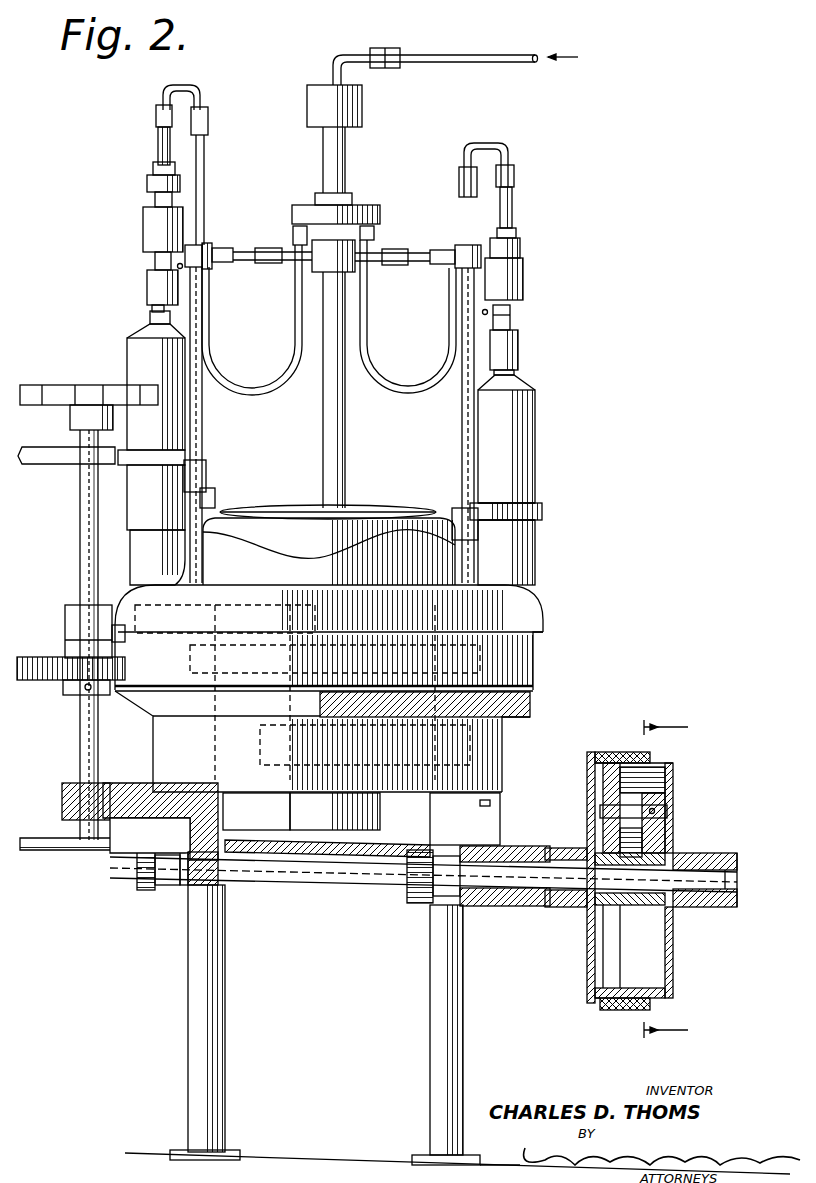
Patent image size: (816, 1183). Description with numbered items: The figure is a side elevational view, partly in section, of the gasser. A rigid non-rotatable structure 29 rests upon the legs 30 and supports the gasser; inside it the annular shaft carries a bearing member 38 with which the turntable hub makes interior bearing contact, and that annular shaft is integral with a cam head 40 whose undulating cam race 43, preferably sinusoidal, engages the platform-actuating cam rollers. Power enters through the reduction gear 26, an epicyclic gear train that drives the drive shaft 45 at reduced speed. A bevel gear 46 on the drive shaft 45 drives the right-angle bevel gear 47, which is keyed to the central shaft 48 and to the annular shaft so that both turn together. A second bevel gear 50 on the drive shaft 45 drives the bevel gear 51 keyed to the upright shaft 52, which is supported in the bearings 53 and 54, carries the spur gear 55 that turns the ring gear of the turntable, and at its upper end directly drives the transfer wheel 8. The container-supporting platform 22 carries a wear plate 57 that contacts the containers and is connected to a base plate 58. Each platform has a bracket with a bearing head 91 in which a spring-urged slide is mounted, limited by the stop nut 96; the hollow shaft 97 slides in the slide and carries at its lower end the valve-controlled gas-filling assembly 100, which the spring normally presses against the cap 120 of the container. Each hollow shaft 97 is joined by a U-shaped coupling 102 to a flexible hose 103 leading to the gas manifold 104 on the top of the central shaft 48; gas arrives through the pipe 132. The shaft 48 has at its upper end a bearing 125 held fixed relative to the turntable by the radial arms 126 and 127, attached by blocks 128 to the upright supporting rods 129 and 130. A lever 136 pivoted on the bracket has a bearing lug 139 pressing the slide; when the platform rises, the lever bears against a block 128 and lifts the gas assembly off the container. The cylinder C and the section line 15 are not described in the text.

The U-shaped coupling 102 is at (195, 76).
The hollow shaft 97 is at (157, 147).
The stop nut 96 is at (147, 182).
The bearing head 91 is at (143, 221).
The bearing lug 139 is at (511, 311).
The gas-filling assembly 100 is at (146, 274).
The cap 120 is at (150, 317).
The cylinder C is at (135, 355).
The transfer wheel 8 is at (58, 385).
The upright shaft 52 is at (80, 530).
The bearing 53 is at (68, 605).
The spur gear 55 is at (33, 657).
The bearing 54 is at (64, 783).
The bevel gear 51 is at (95, 851).
The bevel gear 50 is at (140, 886).
The block 128 is at (206, 243).
The upright supporting rod 129 is at (204, 318).
The radial arm 126 is at (258, 248).
The bearing 125 is at (314, 262).
The radial arm 127 is at (398, 245).
The flexible hose 103 is at (246, 390).
The lever 136 is at (462, 299).
The upright supporting rod 130 is at (462, 351).
The pipe 132 is at (345, 68).
The central shaft 48 is at (323, 436).
The gas manifold 104 is at (370, 205).
The cam race 43 is at (419, 512).
The cam head 40 is at (276, 506).
The rigid non-rotatable structure 29 is at (530, 684).
The bearing member 38 is at (290, 819).
The leg 30 is at (225, 977).
The bevel gear 47 is at (372, 878).
The drive shaft 45 is at (305, 868).
The bevel gear 46 is at (418, 893).
The reduction gear 26 is at (675, 782).
The section line 15 is at (668, 871).
The container-supporting platform 22 is at (543, 510).
The wear plate 57 is at (541, 503).
The base plate 58 is at (542, 521).